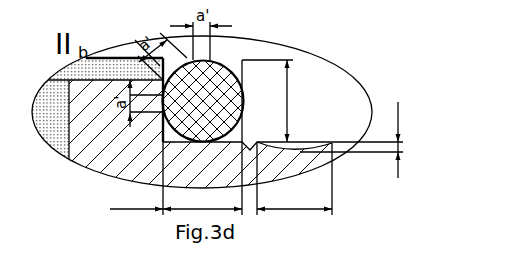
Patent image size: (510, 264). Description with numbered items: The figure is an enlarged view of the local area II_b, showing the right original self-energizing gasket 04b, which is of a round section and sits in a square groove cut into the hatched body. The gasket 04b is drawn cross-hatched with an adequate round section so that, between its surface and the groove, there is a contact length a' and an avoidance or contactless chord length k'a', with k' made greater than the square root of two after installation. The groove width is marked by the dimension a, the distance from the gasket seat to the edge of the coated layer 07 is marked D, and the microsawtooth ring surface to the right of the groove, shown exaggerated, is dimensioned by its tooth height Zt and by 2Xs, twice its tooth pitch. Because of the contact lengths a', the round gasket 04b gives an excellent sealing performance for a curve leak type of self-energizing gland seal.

The gasket 04b is at (131, 25).
The coating layer 07 is at (82, 196).
The groove width / ball diameter dimension a is at (228, 136).
The distance dimension D is at (136, 201).
The contact width dimension 2Xs is at (294, 178).
The tooth height Zt is at (330, 140).